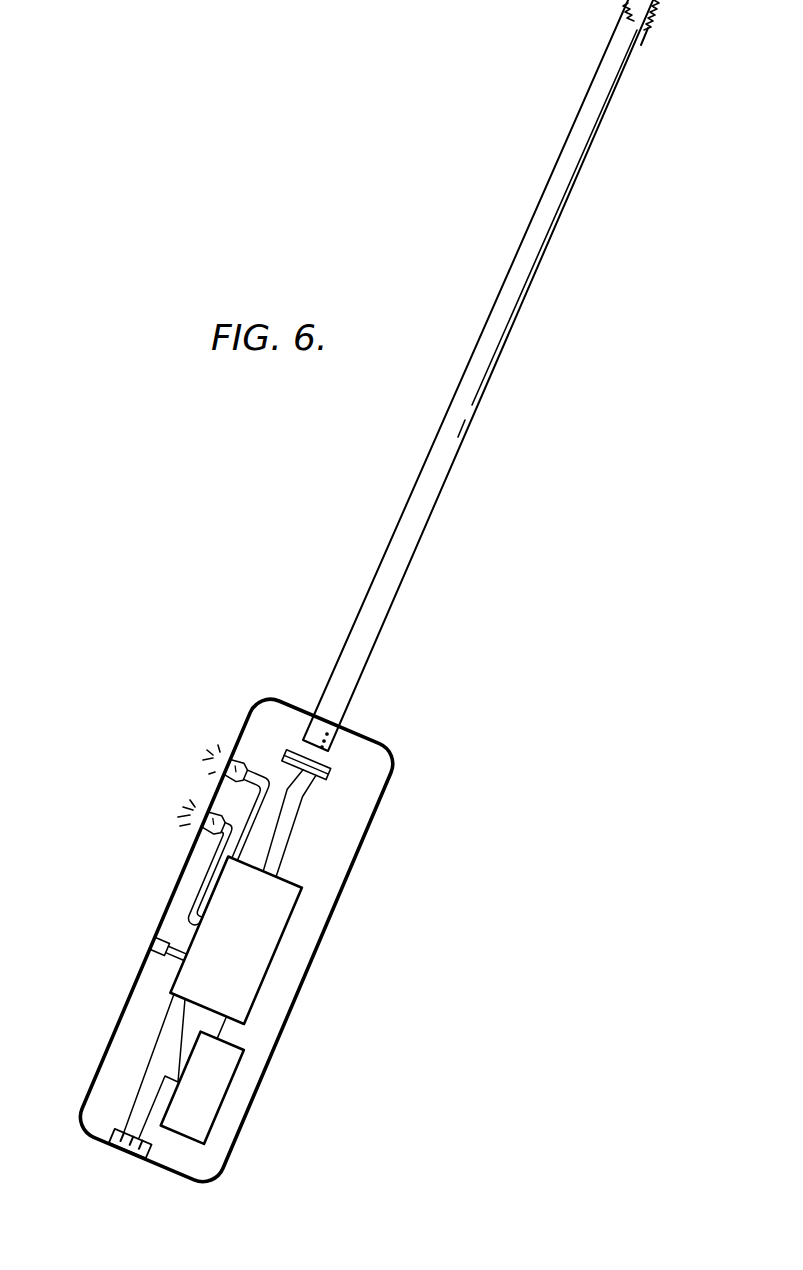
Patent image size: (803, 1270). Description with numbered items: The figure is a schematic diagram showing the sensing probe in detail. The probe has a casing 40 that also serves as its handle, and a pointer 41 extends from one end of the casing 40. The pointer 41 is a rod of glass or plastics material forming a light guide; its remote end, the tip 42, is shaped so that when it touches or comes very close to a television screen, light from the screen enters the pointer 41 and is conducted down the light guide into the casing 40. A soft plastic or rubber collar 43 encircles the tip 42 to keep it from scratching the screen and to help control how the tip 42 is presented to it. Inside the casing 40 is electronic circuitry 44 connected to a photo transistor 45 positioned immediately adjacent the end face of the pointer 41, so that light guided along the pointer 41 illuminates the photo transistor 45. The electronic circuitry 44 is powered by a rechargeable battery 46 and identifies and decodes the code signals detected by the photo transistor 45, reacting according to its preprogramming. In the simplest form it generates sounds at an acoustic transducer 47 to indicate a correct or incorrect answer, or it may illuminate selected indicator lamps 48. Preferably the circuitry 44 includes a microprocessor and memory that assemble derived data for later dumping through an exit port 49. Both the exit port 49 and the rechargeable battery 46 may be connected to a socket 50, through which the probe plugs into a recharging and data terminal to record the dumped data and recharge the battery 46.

The casing 40 is at (379, 805).
The pointer 41 is at (464, 379).
The tip 42 is at (645, 36).
The collar 43 is at (658, 22).
The electronic circuitry 44 is at (258, 947).
The photo transistor 45 is at (331, 761).
The rechargeable battery 46 is at (217, 1094).
The acoustic transducer 47 is at (157, 941).
The indicator lamps 48 is at (198, 814).
The exit port 49 is at (182, 1011).
The socket 50 is at (113, 1143).